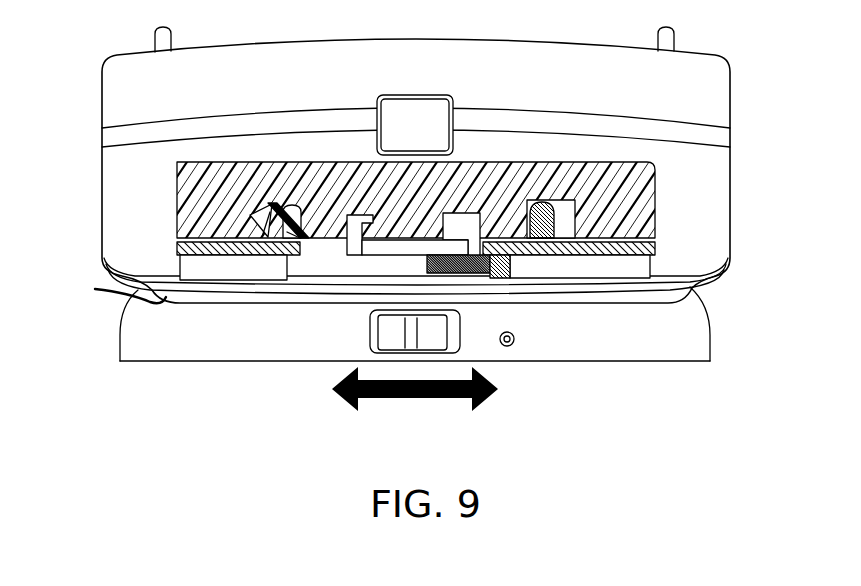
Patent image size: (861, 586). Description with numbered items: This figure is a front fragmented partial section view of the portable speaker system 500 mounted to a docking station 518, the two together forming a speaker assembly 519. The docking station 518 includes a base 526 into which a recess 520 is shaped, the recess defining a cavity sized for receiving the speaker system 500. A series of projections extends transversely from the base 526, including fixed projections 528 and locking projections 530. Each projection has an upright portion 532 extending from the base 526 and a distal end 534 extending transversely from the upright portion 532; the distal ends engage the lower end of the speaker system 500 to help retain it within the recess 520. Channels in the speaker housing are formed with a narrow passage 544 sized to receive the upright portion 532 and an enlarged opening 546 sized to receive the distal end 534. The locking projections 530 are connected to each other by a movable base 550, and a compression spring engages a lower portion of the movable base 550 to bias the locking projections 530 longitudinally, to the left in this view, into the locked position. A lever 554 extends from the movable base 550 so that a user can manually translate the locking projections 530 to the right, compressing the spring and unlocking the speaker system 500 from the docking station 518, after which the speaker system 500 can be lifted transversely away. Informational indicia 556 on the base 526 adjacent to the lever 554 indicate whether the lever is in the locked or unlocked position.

The portable speaker system 500 is at (110, 63).
The speaker assembly 519 is at (742, 78).
The docking station 518 is at (713, 340).
The recess 520 is at (106, 307).
The base 526 is at (170, 364).
The fixed projections 528 is at (289, 236).
The locking projections 530 is at (366, 268).
The upright portion 532 is at (300, 215).
The distal end 534 is at (266, 207).
The narrow passage 544 is at (278, 247).
The enlarged opening 546 is at (268, 214).
The movable base 550 is at (487, 263).
The lever 554 is at (448, 338).
The informational indicia 556 is at (530, 336).